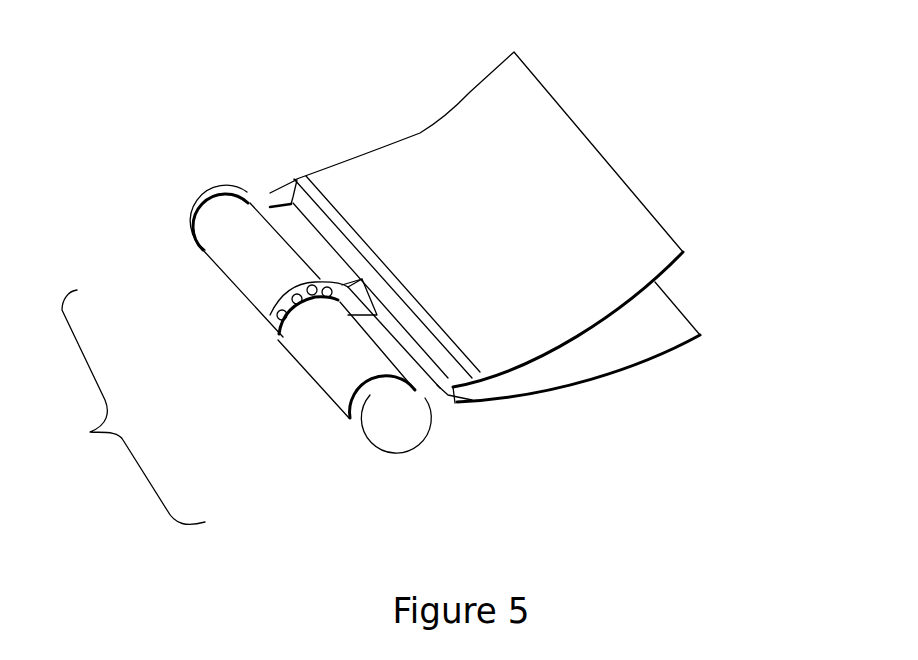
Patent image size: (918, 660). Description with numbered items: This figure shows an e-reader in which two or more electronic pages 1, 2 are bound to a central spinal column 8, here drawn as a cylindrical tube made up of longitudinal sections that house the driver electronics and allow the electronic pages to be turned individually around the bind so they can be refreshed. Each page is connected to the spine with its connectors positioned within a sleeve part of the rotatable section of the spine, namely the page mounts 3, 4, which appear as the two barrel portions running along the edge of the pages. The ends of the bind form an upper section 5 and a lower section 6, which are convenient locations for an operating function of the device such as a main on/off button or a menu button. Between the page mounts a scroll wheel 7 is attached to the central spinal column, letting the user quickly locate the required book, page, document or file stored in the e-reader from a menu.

The page 1 is at (547, 178).
The page 2 is at (647, 333).
The page mount 3 is at (245, 267).
The page mount 4 is at (337, 368).
The upper section of the bind 5 is at (208, 215).
The lower section of the bind 6 is at (392, 425).
The scroll wheel 7 is at (290, 308).
The central spinal column 8 is at (129, 407).